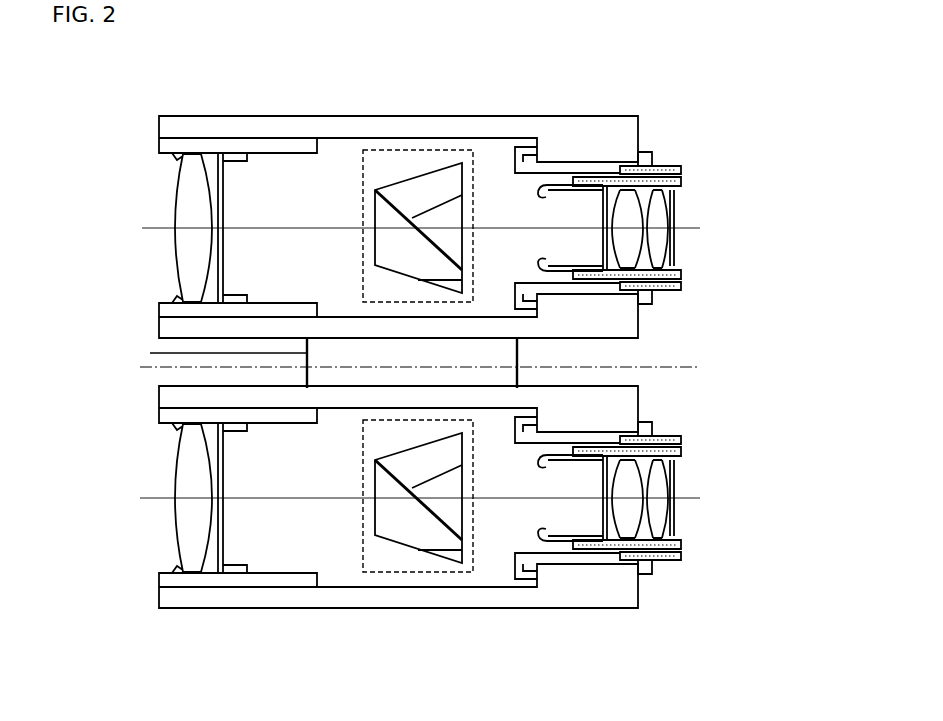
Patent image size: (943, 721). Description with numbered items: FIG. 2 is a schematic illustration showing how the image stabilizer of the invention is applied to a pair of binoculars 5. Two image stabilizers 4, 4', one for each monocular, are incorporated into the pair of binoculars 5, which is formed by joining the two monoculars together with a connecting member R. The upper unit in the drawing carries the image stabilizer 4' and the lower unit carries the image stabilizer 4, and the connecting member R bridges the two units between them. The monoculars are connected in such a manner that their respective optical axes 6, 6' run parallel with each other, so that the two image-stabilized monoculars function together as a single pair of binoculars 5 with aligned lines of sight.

The image stabilizer 4' is at (395, 188).
The optical axis 6' is at (168, 226).
The connecting member R is at (150, 353).
The pair of binoculars 5 is at (808, 250).
The optical axis 6 is at (175, 495).
The image stabilizer 4 is at (401, 541).